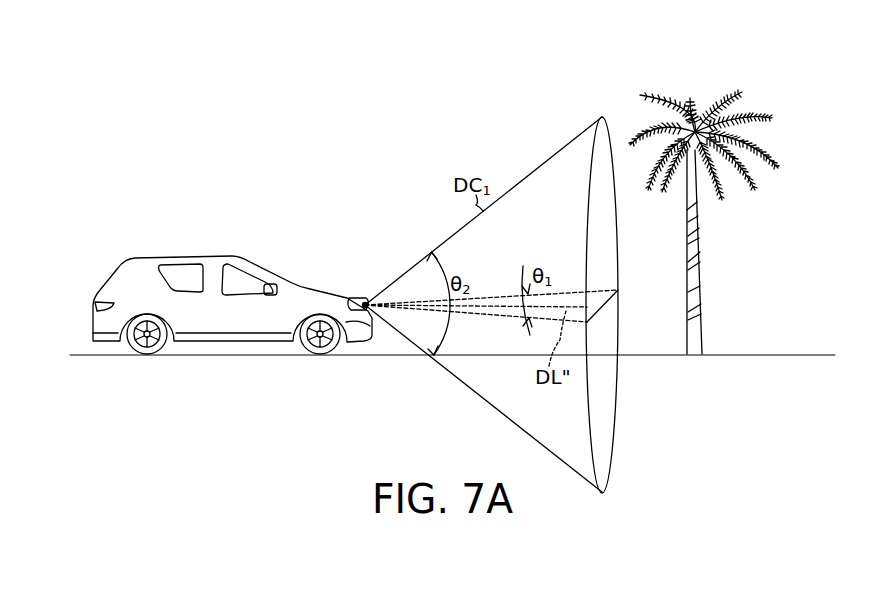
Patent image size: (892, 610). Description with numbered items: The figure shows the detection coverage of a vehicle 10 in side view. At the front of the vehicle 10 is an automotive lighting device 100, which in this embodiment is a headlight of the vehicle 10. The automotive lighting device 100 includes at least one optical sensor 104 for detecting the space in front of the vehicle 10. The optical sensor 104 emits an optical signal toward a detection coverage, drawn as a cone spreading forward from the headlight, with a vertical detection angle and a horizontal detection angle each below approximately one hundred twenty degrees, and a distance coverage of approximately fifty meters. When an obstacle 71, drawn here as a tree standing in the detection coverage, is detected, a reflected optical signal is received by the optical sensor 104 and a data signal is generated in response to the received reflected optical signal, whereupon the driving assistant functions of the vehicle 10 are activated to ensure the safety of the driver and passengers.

The vehicle 10 is at (263, 263).
The obstacle 71 is at (686, 96).
The automotive lighting device 100 is at (355, 300).
The optical sensor 104 is at (367, 302).